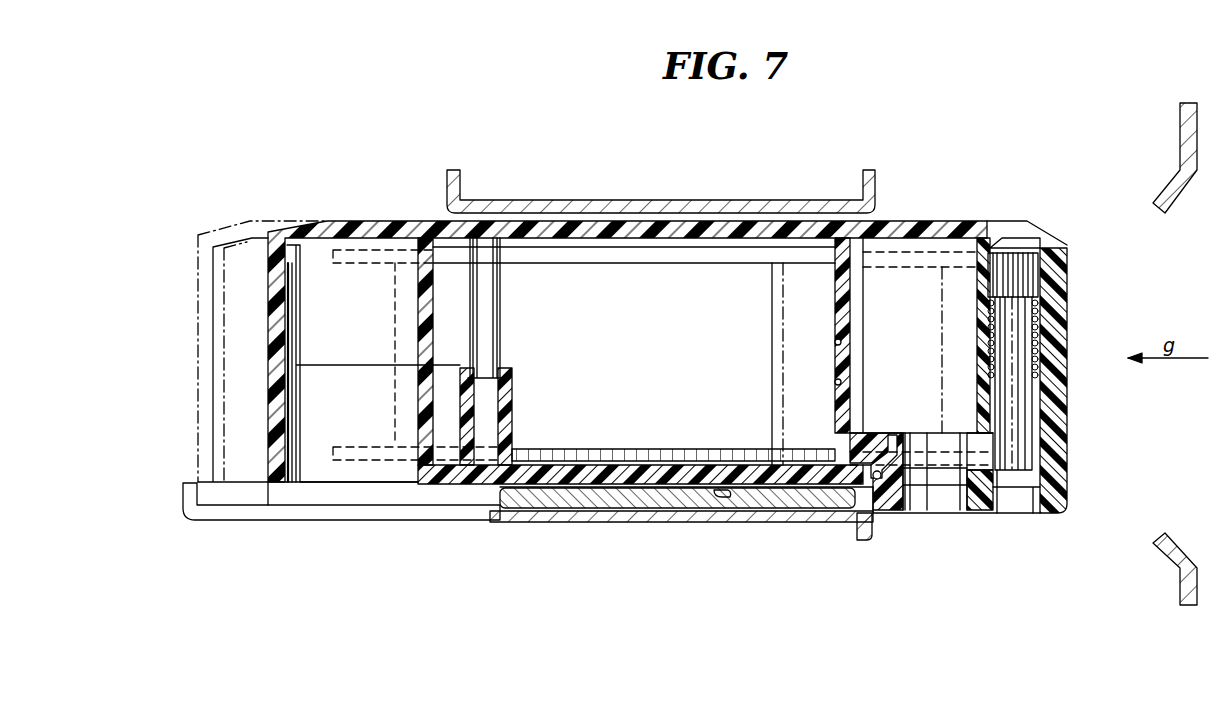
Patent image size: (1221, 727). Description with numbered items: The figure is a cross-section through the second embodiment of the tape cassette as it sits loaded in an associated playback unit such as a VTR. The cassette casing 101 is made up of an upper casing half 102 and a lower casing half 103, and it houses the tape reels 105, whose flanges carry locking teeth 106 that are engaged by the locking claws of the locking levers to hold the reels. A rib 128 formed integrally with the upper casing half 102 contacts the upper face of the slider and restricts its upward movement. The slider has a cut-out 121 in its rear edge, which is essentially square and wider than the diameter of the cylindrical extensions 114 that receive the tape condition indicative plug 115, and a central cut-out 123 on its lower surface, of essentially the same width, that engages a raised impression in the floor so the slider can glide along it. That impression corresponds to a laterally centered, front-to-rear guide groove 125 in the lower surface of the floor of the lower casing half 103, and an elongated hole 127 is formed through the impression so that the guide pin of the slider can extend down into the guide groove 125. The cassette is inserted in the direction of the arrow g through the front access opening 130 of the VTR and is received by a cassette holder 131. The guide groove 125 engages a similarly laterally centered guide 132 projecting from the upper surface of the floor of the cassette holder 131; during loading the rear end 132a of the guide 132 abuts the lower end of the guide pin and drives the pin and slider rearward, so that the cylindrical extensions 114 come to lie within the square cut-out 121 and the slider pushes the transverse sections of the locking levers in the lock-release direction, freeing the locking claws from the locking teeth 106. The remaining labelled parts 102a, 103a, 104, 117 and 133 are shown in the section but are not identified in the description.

The cassette casing 101 is at (940, 210).
The upper casing half 102 is at (636, 232).
The housing side wall 102a is at (1060, 303).
The lower casing half 103 is at (427, 495).
The base plate end portion 103a is at (1003, 482).
The inner member 104 is at (292, 286).
The tape reels 105 is at (593, 286).
The locking teeth 106 is at (685, 451).
The cylindrical extensions 114 is at (978, 345).
The tape condition indicative plug 115 is at (1015, 378).
The ports 117 is at (835, 382).
The cut-out 121 is at (918, 470).
The central cut-out 123 is at (880, 474).
The guide groove 125 is at (722, 497).
The elongated hole 127 is at (950, 500).
The rib 128 is at (902, 290).
The front access opening 130 is at (1160, 215).
The cassette holder 131 is at (605, 515).
The guide 132 is at (688, 498).
The rear end 132a is at (860, 533).
The bracket 133 is at (186, 497).